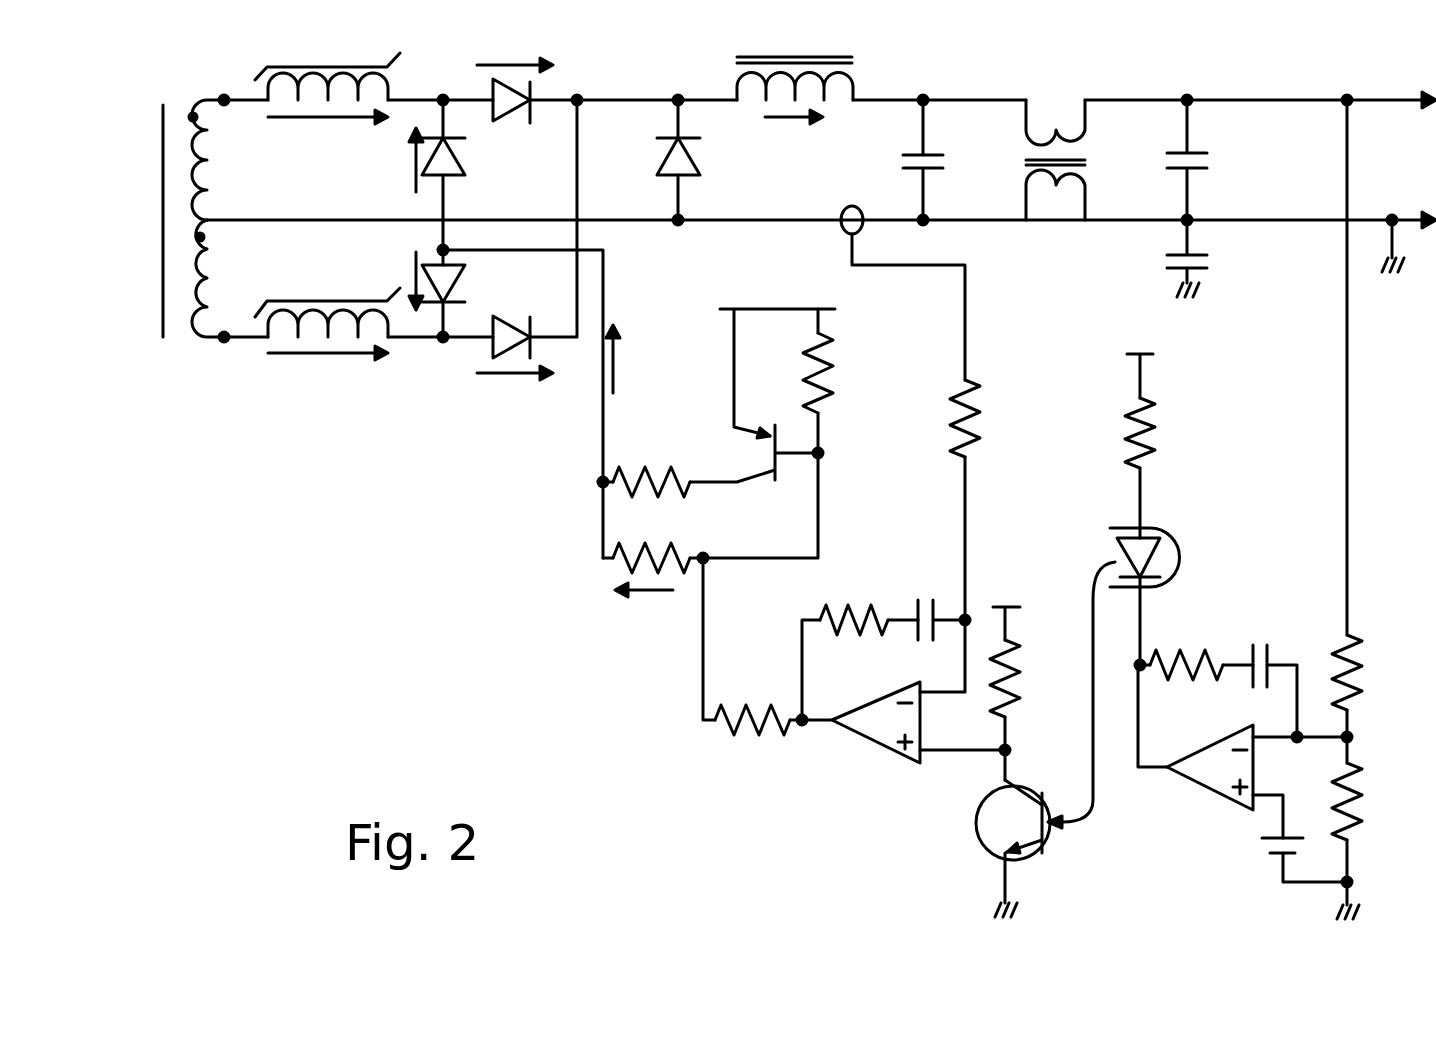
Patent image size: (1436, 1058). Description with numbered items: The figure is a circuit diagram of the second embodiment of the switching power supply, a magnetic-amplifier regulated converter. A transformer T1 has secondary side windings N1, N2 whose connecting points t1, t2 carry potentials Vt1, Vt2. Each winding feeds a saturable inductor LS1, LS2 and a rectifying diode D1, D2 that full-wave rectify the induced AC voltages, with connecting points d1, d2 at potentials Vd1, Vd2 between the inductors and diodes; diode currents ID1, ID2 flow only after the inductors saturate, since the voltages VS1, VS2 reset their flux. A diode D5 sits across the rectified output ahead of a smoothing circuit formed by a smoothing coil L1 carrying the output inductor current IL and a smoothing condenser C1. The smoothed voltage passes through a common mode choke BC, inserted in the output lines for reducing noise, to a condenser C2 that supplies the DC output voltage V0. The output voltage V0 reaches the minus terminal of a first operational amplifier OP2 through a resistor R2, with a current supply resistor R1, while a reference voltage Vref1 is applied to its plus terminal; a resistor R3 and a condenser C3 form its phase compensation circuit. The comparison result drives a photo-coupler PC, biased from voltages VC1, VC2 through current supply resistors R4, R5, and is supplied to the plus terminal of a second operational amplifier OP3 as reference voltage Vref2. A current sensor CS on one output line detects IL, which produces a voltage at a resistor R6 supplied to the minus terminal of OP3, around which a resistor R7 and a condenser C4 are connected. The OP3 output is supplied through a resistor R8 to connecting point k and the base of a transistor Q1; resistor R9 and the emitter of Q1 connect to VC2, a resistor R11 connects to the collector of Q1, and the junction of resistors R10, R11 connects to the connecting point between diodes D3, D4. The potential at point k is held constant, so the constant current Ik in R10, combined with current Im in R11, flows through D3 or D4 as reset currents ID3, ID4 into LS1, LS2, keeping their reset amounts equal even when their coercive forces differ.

The transformer T1 is at (164, 205).
The secondary side winding N1 is at (207, 160).
The secondary side winding N2 is at (207, 278).
The saturable inductor LS1 is at (288, 70).
The saturable inductor LS2 is at (287, 300).
The rectifying diode D1 is at (513, 115).
The rectifying diode D2 is at (515, 325).
The diode D3 is at (455, 178).
The diode D4 is at (463, 275).
The diode D5 is at (660, 156).
The smoothing coil L1 is at (777, 58).
The smoothing condenser C1 is at (945, 158).
The condenser C2 is at (1200, 158).
The common mode choke BC is at (1058, 125).
The current sensor CS is at (845, 232).
The transistor Q1 is at (776, 492).
The resistor R9 is at (833, 387).
The resistor R11 is at (650, 472).
The resistor R10 is at (678, 553).
The resistor R6 is at (980, 430).
The resistor R7 is at (836, 614).
The condenser C4 is at (908, 612).
The resistor R8 is at (742, 714).
The second operational amplifier OP3 is at (870, 760).
The resistor R5 is at (1043, 688).
The photo-coupler PC is at (985, 847).
The resistor R4 is at (1158, 440).
The resistor R3 is at (1183, 662).
The condenser C3 is at (1265, 658).
The first operational amplifier OP2 is at (1192, 778).
The resistor R2 is at (1362, 690).
The resistor R1 is at (1360, 817).
The potential at connecting point t1 Vt1 is at (218, 48).
The potential at connecting point t2 Vt2 is at (216, 387).
The connecting point t1 is at (226, 77).
The connecting point t2 is at (225, 357).
The electric potential of connecting point d1 Vd1 is at (446, 47).
The electric potential of connecting point d2 Vd2 is at (436, 390).
The connecting point d1 is at (449, 80).
The connecting point d2 is at (447, 357).
The voltage of saturable inductor LS1 VS1 is at (328, 129).
The voltage of saturable inductor LS2 VS2 is at (328, 365).
The current ID1 is at (515, 51).
The current ID2 is at (515, 388).
The current ID3 is at (400, 160).
The current ID4 is at (399, 281).
The output inductor current IL is at (794, 131).
The current Im is at (629, 359).
The current Ik is at (644, 601).
The connecting point k is at (722, 576).
The DC output voltage V0 is at (1348, 343).
The bias voltage VC1 is at (1146, 339).
The bias voltage VC2 is at (781, 295).
The reference voltage Vref1 is at (1275, 855).
The reference voltage Vref2 is at (965, 774).